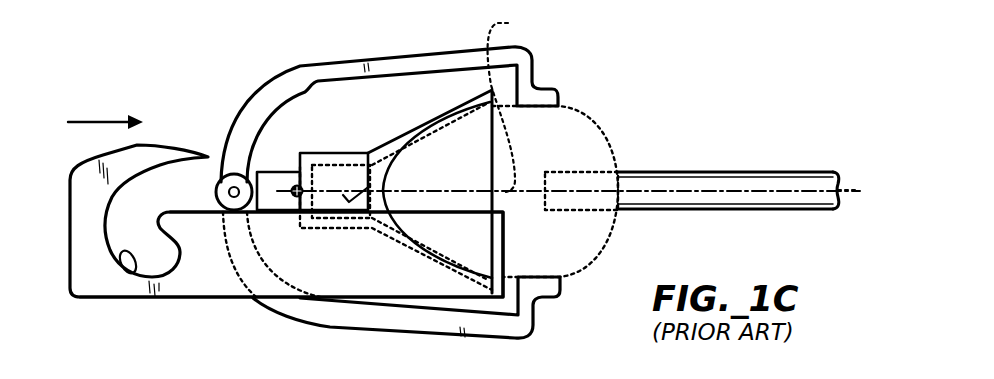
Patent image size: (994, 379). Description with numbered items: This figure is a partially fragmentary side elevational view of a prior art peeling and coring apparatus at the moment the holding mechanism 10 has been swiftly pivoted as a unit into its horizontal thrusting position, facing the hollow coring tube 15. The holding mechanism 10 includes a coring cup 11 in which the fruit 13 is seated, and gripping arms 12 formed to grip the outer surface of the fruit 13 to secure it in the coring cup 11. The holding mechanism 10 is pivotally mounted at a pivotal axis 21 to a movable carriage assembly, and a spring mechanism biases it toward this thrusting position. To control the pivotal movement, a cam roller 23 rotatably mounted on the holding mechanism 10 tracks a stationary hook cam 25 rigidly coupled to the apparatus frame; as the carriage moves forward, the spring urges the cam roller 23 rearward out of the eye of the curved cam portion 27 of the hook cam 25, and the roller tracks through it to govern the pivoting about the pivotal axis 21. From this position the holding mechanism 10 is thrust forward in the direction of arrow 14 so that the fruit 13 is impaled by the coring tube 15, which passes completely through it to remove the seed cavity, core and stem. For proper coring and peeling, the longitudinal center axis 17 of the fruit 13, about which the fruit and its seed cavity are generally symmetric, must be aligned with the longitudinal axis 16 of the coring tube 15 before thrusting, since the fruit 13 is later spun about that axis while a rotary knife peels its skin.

The holding mechanism 10 is at (138, 63).
The coring cup 11 is at (438, 115).
The gripping arms 12 is at (450, 49).
The fruit 13 is at (588, 113).
The arrow 14 is at (106, 117).
The hollow coring tube 15 is at (787, 211).
The longitudinal axis of coring tube 16 is at (857, 192).
The longitudinal center axis of fruit 17 is at (511, 102).
The pivotal axis 21 is at (296, 186).
The cam roller 23 is at (221, 180).
The hook cam 25 is at (218, 306).
The curved cam portion 27 is at (138, 273).